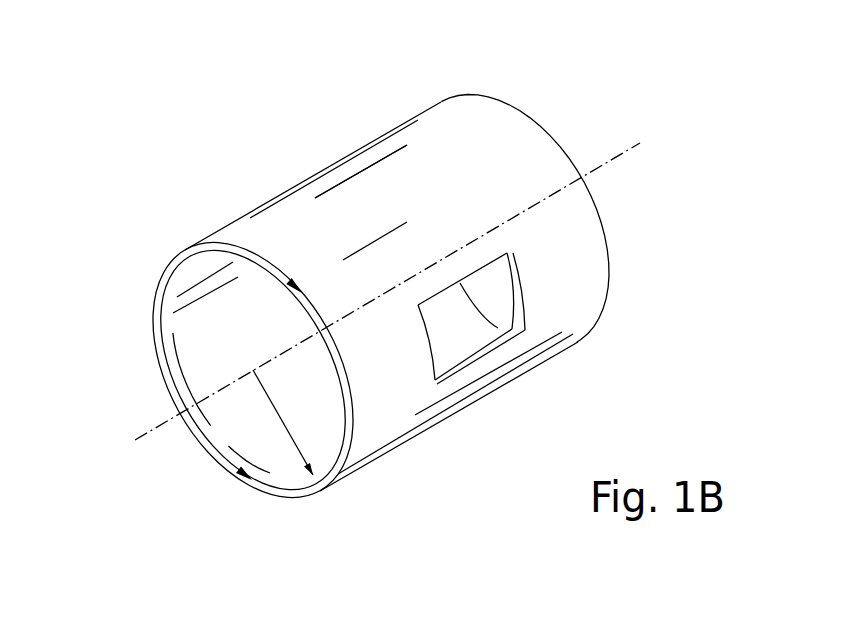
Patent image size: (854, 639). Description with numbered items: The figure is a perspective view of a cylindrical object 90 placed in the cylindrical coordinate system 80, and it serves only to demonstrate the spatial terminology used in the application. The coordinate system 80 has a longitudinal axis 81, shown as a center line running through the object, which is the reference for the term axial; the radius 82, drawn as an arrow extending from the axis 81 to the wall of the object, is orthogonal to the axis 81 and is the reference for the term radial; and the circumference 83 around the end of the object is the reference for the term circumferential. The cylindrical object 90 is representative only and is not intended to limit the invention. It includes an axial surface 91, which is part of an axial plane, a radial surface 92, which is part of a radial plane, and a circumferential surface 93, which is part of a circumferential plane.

The cylindrical coordinate system 80 is at (543, 112).
The longitudinal axis 81 is at (142, 428).
The radius 82 is at (290, 423).
The circumference 83 is at (163, 270).
The cylindrical object 90 is at (420, 100).
The axial surface 91 is at (499, 334).
The radial surface 92 is at (268, 482).
The circumferential surface 93 is at (357, 192).